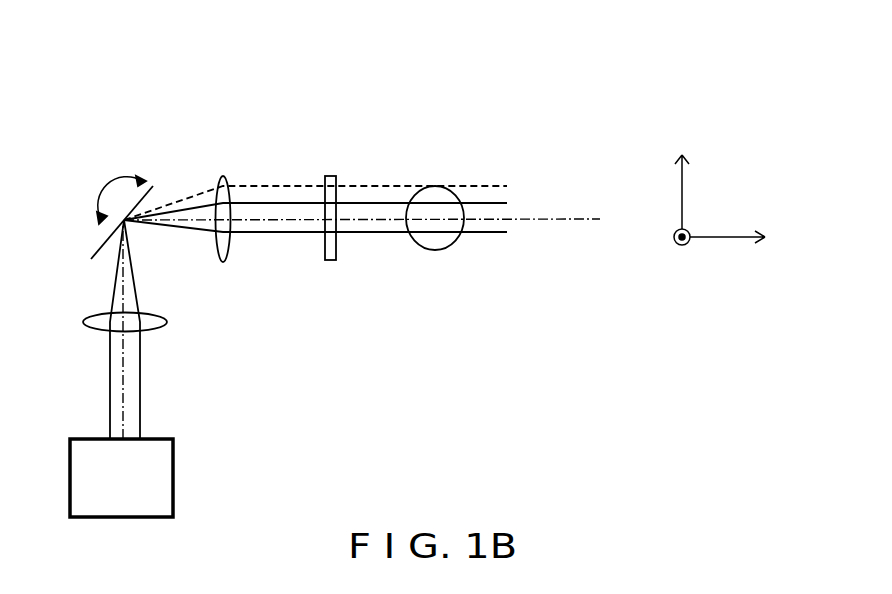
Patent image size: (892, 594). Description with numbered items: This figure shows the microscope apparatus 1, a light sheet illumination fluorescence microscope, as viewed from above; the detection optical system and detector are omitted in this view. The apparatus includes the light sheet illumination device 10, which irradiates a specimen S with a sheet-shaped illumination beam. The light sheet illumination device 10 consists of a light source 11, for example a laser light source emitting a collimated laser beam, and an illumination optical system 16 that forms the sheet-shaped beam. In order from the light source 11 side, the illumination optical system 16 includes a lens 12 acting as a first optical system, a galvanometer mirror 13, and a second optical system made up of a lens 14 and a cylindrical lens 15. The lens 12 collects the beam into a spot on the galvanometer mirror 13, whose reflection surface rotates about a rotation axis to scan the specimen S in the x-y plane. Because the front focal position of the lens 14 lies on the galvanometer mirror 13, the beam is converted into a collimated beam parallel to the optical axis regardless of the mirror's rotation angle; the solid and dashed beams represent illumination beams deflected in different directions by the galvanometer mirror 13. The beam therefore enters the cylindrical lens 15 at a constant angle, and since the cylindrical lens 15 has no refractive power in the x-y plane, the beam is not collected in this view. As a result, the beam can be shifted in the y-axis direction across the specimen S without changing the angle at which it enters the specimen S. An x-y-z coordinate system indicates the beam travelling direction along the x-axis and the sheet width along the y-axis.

The microscope apparatus 1 is at (715, 40).
The light sheet illumination device 10 is at (163, 105).
The light source 11 is at (174, 466).
The lens 12 is at (167, 323).
The galvanometer mirror 13 is at (91, 259).
The lens 14 is at (223, 262).
The cylindrical lens 15 is at (331, 260).
The illumination optical system 16 is at (362, 337).
The specimen S is at (460, 200).